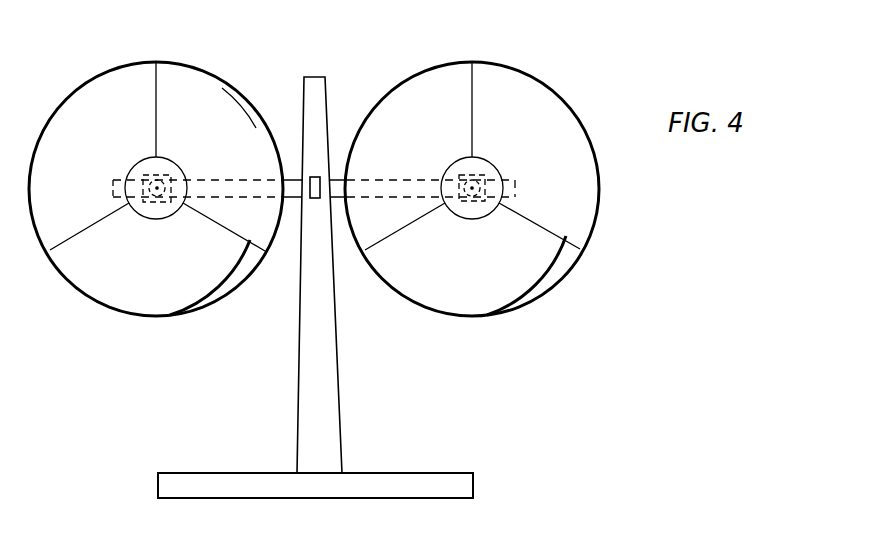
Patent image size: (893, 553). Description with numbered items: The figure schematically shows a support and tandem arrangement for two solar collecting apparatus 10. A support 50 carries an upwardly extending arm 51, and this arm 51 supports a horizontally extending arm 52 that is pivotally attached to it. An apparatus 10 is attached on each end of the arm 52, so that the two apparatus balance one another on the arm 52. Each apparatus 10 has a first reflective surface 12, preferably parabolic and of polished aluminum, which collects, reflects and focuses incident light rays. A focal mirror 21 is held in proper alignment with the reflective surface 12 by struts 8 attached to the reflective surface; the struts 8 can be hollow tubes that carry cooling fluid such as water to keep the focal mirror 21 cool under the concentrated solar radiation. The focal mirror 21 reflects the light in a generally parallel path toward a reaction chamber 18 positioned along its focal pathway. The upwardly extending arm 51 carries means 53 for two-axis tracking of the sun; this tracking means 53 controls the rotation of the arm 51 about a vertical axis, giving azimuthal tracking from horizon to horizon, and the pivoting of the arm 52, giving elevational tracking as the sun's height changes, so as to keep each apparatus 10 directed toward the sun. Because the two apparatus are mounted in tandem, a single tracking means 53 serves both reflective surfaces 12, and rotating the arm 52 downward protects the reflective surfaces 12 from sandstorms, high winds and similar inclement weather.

The struts 8 is at (250, 243).
The apparatus 10 is at (117, 62).
The first reflective surface 12 is at (228, 90).
The reaction chamber 18 is at (157, 204).
The focal mirror 21 is at (175, 163).
The support 50 is at (403, 448).
The upwardly extending arm 51 is at (337, 329).
The horizontally extending arm 52 is at (250, 180).
The two-axis tracking means 53 is at (316, 178).